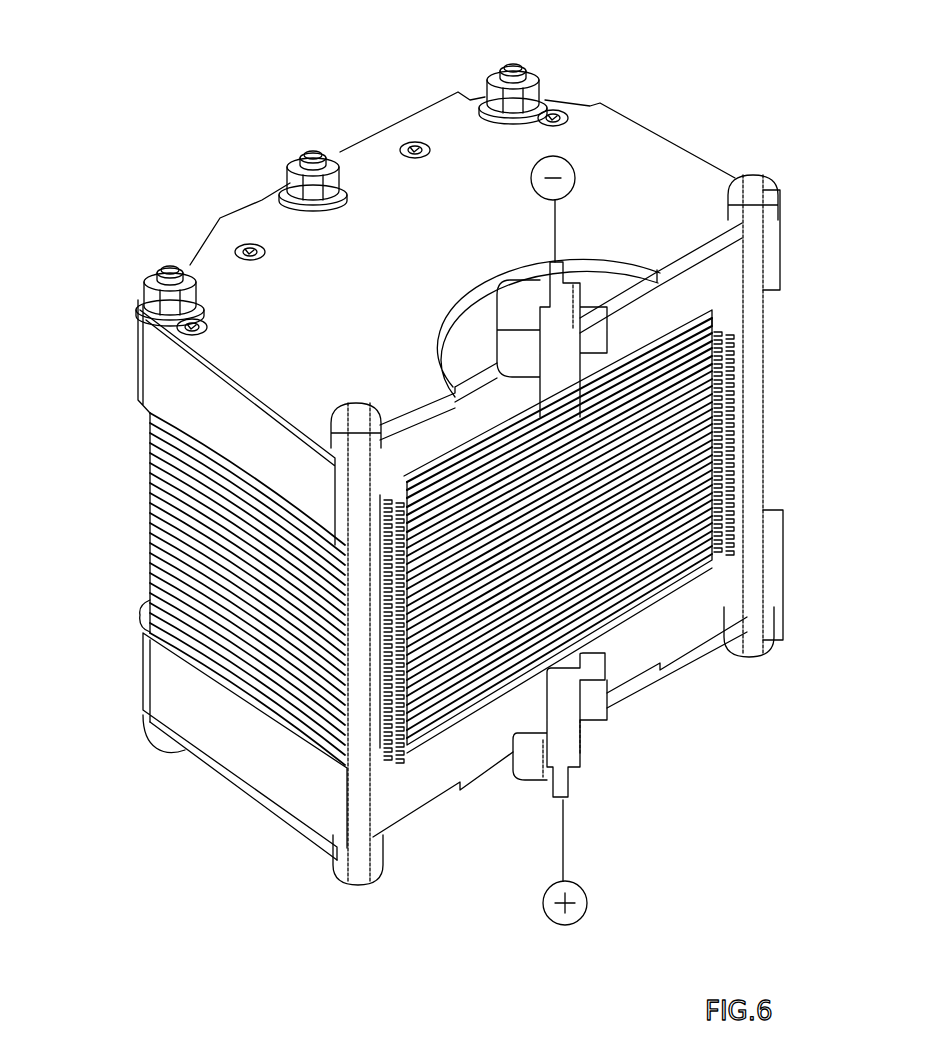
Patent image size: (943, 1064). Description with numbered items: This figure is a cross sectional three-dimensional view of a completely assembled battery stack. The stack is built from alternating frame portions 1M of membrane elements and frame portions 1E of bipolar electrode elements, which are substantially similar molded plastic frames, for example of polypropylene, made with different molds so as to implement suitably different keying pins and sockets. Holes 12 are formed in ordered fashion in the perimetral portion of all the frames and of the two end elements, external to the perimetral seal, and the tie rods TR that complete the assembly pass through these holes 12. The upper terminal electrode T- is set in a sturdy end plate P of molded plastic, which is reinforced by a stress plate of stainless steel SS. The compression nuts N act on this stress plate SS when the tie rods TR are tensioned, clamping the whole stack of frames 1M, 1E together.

The tie rod TR is at (513, 68).
The compression nut N is at (492, 72).
The stress plate of stainless steel SS is at (625, 147).
The end plate of molded plastic P is at (158, 372).
The upper terminal electrode T- is at (712, 313).
The frame portion of membrane element 1M is at (767, 300).
The frame portion of bipolar electrode element 1E is at (768, 310).
The holes 12 is at (768, 377).